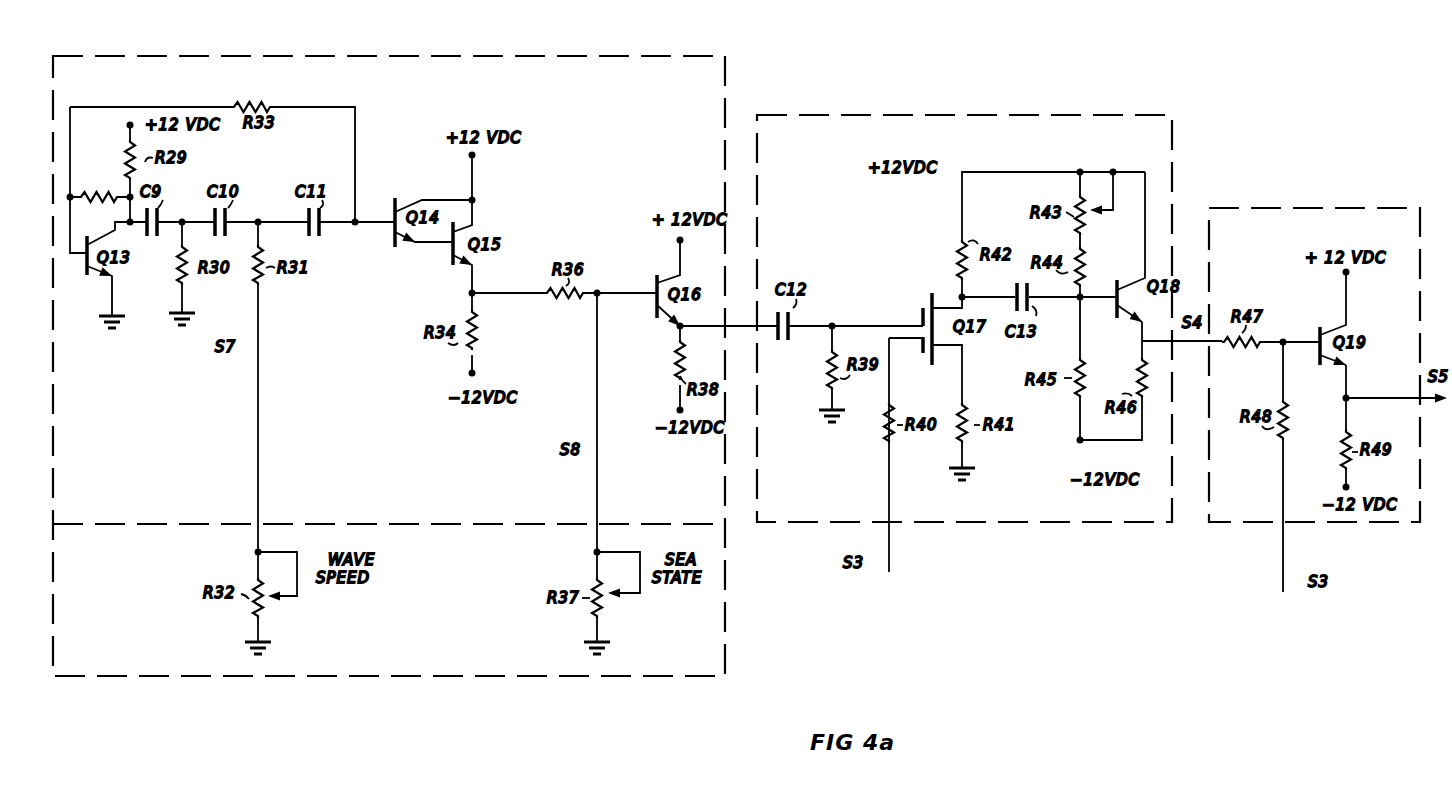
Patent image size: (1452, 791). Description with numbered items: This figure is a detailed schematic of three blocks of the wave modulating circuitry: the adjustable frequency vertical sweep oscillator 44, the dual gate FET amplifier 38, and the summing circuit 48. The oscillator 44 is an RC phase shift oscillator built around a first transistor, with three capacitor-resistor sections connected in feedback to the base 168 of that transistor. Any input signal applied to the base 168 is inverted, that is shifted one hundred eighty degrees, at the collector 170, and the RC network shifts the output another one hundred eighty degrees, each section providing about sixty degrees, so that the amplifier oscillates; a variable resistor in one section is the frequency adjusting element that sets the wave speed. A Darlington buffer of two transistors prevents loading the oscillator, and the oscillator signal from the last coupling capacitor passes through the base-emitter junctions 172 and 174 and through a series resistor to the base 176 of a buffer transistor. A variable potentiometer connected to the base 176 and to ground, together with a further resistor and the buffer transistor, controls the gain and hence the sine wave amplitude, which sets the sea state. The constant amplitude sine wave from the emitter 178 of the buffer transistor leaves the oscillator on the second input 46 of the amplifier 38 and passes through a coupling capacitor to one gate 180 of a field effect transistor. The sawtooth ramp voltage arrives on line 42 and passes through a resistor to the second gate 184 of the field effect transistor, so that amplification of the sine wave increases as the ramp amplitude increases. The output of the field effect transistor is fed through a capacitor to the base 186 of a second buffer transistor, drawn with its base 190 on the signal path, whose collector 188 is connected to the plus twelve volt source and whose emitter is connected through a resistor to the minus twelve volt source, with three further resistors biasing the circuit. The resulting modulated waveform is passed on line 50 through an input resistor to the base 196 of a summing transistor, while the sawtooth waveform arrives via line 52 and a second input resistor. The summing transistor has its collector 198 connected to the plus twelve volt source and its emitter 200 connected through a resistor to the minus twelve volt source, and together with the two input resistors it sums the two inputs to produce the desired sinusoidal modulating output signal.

The vertical sweep oscillator 44 is at (314, 54).
The dual gate FET amplifier 38 is at (936, 109).
The summing circuit 48 is at (1323, 208).
The base of transistor Q13 168 is at (84, 275).
The collector of transistor Q13 170 is at (98, 240).
The base-emitter junction of transistor Q14 172 is at (391, 232).
The base-emitter junction of transistor Q15 174 is at (452, 263).
The base of transistor Q16 176 is at (649, 282).
The emitter of transistor Q16 178 is at (663, 318).
The second input of amplifier 46 is at (735, 330).
The gate of FET Q17 180 is at (918, 317).
The second gate of FET Q17 184 is at (918, 345).
The line 42 is at (895, 560).
The base of transistor Q18 186 is at (1115, 314).
The collector of transistor Q18 188 is at (1133, 280).
The base of transistor Q18 190 is at (1127, 309).
The input line 50 is at (1186, 350).
The base of transistor Q19 196 is at (1318, 324).
The collector of transistor Q19 198 is at (1332, 322).
The emitter of transistor Q19 200 is at (1322, 364).
The line 52 is at (1281, 577).